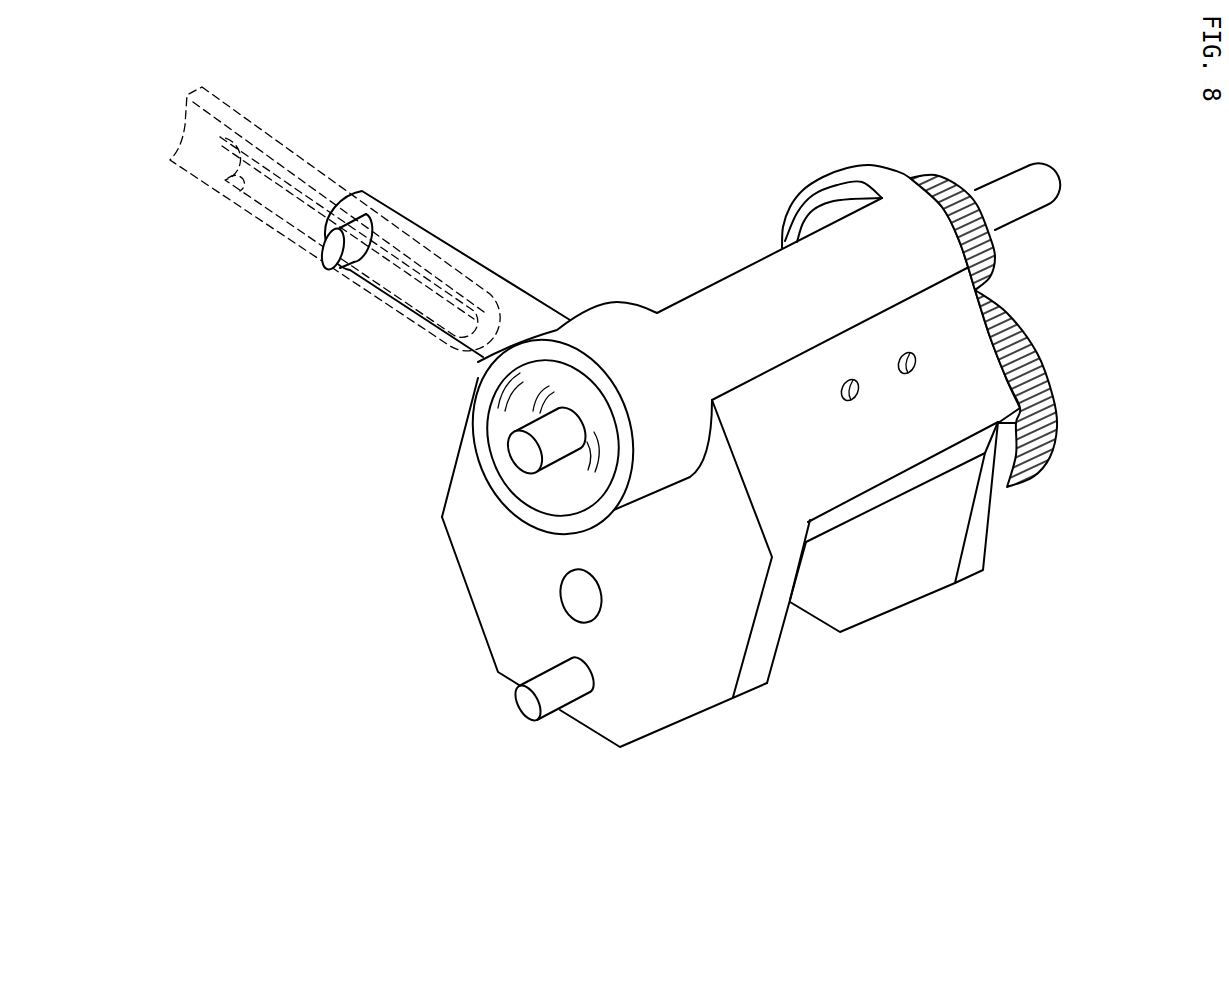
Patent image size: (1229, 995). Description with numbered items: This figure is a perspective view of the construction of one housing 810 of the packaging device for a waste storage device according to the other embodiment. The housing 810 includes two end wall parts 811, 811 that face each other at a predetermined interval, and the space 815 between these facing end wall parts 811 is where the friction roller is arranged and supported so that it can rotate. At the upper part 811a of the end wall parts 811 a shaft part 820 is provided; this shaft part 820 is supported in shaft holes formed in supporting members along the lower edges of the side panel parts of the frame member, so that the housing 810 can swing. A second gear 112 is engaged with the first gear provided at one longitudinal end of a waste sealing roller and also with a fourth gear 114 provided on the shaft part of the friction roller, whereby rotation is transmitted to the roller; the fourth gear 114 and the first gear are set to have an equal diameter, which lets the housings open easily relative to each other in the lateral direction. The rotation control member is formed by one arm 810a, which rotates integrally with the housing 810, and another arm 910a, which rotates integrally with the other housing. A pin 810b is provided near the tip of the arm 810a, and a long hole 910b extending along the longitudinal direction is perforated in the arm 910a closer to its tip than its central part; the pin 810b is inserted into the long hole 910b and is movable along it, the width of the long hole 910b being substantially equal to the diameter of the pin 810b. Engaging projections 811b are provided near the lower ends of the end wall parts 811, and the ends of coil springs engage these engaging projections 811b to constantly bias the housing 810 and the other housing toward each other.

The housing 810 is at (388, 449).
The arm 810a is at (484, 268).
The pin 810b is at (323, 268).
The end wall part 811 is at (482, 595).
The upper part 811a is at (485, 397).
The engaging projection 811b is at (527, 707).
The space 815 is at (797, 618).
The shaft part 820 is at (522, 454).
The second gear 112 is at (923, 177).
The fourth gear 114 is at (1040, 353).
The arm 910a is at (277, 138).
The long hole 910b is at (228, 183).